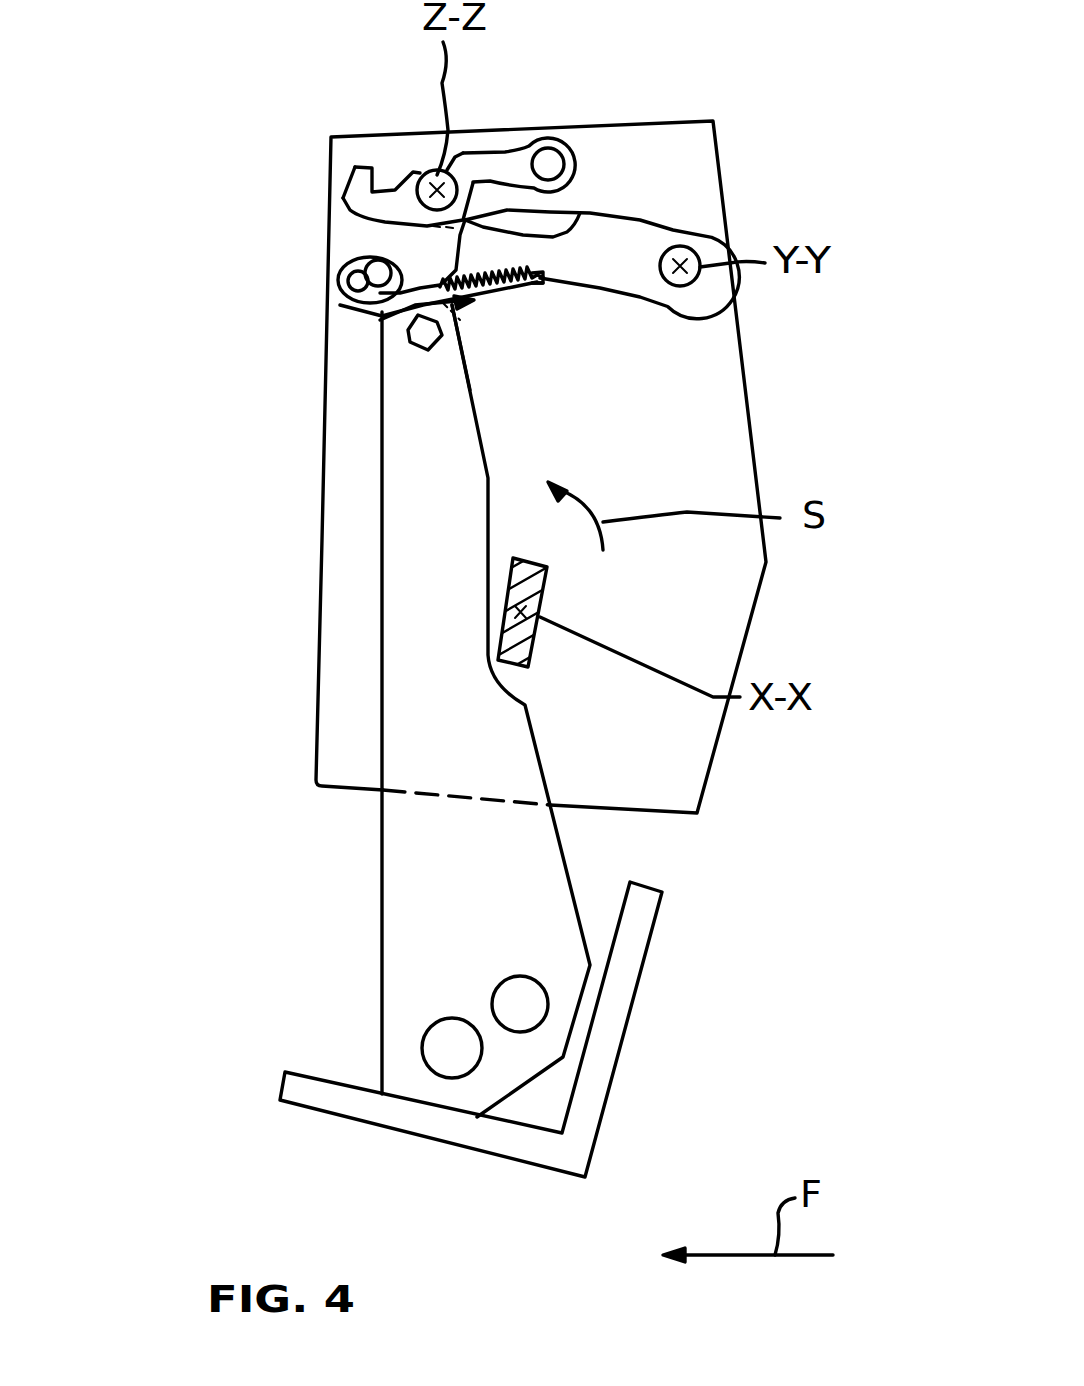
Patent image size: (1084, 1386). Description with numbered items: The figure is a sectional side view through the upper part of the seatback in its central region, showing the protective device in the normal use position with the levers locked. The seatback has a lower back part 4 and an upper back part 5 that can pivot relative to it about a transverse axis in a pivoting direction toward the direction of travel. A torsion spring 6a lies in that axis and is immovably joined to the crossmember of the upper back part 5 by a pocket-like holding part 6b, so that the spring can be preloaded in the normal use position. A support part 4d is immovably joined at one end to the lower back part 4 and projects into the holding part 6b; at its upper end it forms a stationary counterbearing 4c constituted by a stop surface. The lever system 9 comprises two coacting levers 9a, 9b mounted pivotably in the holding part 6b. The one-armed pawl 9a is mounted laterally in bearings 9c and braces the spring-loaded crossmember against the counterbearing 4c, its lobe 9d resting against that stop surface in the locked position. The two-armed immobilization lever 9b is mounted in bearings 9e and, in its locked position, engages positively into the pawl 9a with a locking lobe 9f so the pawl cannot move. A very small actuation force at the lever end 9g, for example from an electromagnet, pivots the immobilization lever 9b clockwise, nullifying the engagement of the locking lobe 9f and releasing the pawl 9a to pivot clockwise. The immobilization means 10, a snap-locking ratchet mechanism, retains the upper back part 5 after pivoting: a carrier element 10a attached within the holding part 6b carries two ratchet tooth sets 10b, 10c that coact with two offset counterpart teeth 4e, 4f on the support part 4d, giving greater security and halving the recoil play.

The lower back part 4 is at (513, 741).
The counterbearing 4c is at (420, 352).
The support part 4d is at (407, 933).
The tooth 4e is at (370, 257).
The tooth 4f is at (362, 314).
The upper back part 5 is at (232, 245).
The torsion spring 6a is at (547, 597).
The holding part 6b is at (673, 785).
The pawl lever 9 is at (648, 144).
The pawl 9a is at (380, 320).
The immobilization lever 9b is at (513, 140).
The bearings 9c is at (692, 256).
The lobe 9d is at (410, 337).
The bearings 9e is at (420, 173).
The locking lobe 9f is at (345, 218).
The lever end 9g is at (556, 152).
The immobilization means 10 is at (490, 322).
The carrier element 10a is at (576, 203).
The ratchet tooth set 10b is at (543, 279).
The ratchet tooth set 10c is at (540, 285).